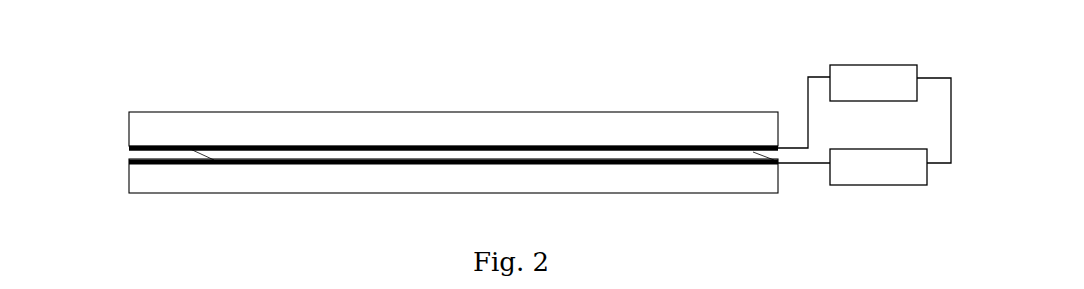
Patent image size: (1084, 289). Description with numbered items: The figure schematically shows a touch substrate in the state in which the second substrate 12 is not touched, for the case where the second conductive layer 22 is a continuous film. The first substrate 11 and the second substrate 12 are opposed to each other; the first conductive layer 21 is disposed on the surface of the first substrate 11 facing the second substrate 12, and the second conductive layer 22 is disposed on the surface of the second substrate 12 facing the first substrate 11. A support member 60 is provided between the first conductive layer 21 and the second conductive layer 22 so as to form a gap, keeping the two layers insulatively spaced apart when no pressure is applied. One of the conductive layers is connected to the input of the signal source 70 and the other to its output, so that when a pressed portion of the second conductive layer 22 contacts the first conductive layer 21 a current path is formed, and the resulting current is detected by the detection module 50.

The first substrate 11 is at (134, 182).
The second substrate 12 is at (136, 123).
The first conductive layer 21 is at (132, 161).
The second conductive layer 22 is at (136, 148).
The detection module 50 is at (908, 185).
The support member 60 is at (183, 154).
The signal source 70 is at (893, 65).